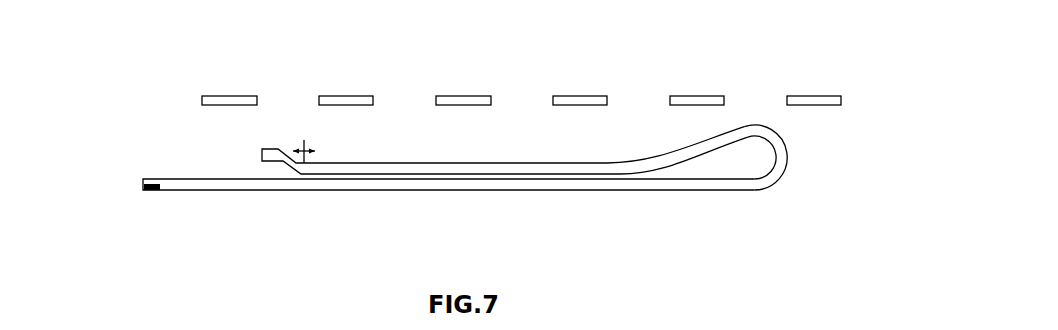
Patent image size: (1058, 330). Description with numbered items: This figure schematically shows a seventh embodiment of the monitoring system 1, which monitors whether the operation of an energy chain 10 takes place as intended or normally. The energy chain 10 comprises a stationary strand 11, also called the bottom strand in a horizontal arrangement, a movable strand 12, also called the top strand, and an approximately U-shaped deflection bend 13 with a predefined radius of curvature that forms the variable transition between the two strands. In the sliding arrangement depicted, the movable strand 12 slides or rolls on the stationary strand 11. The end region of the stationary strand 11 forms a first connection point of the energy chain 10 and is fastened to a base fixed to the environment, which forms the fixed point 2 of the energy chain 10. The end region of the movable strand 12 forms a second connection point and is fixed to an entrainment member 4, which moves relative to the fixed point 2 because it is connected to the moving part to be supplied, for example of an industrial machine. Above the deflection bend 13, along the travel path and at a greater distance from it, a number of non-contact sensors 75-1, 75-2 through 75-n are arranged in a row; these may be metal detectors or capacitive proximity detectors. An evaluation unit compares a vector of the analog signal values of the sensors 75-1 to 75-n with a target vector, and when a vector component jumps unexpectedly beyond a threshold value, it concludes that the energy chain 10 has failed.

The monitoring system 1 is at (140, 65).
The fixed point 2 is at (161, 185).
The entrainment member 4 is at (280, 147).
The energy chain 10 is at (493, 142).
The stationary strand 11 is at (444, 213).
The movable strand 12 is at (505, 106).
The deflection bend 13 is at (789, 163).
The non-contact sensor 75-1 is at (220, 100).
The non-contact sensor 75-2 is at (333, 98).
The non-contact sensor 75-n is at (792, 98).